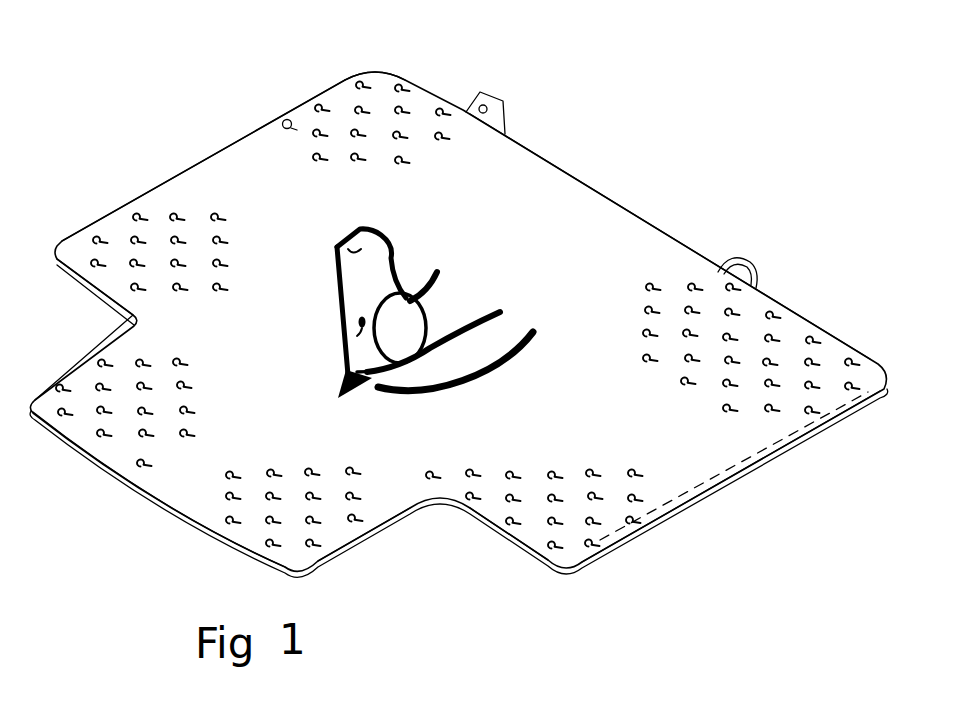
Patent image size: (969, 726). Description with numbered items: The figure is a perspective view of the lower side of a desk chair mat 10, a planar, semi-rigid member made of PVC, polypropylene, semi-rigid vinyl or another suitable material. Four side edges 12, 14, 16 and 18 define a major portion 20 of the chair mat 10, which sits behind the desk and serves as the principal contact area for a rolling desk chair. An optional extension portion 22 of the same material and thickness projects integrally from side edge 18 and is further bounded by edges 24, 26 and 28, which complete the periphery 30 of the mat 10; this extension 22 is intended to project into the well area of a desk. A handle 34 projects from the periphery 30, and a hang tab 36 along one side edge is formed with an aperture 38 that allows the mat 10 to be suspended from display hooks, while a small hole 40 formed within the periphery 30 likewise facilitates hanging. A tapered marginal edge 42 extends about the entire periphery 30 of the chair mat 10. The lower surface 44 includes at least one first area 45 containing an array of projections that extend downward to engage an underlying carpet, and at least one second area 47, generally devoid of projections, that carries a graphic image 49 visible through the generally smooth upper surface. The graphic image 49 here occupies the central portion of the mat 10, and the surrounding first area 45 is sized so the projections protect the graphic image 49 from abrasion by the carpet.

The desk chair mat 10 is at (686, 185).
The side edge 12 is at (212, 156).
The side edge 14 is at (582, 180).
The side edge 16 is at (729, 472).
The side edge 18 is at (492, 532).
The major portion 20 is at (686, 450).
The extension portion 22 is at (193, 481).
The edge 24 is at (363, 546).
The edge 26 is at (120, 477).
The edge 28 is at (100, 342).
The periphery 30 is at (436, 97).
The handle 34 is at (760, 268).
The hang tab 36 is at (500, 110).
The aperture 38 is at (493, 100).
The small hole 40 is at (289, 120).
The tapered marginal edge 42 is at (808, 438).
The lower surface 44 is at (600, 415).
The first area 45 is at (383, 94).
The second area 47 is at (475, 283).
The graphic image 49 is at (487, 378).